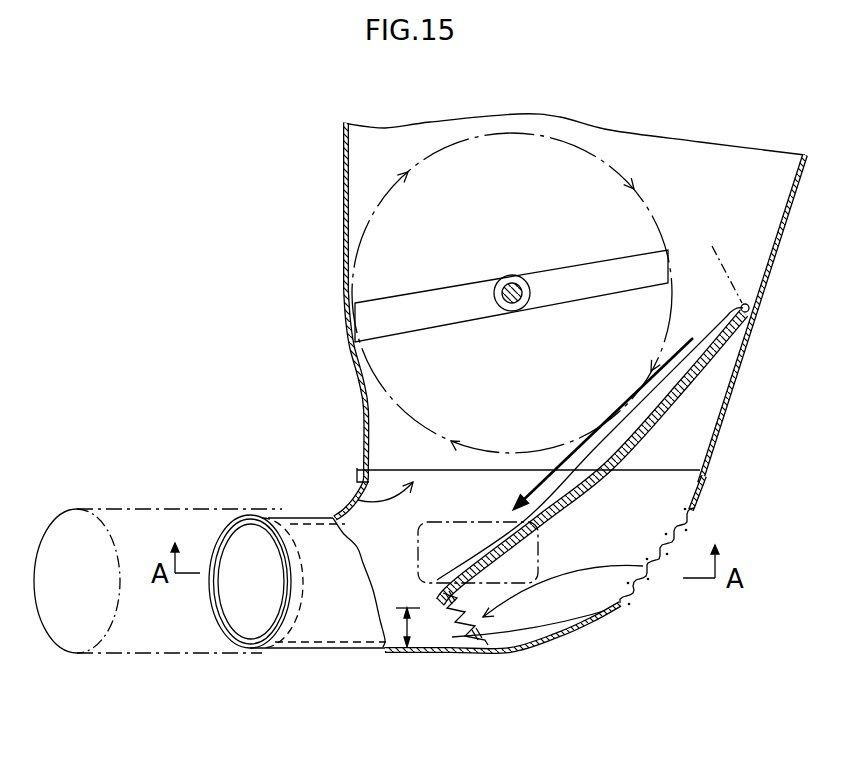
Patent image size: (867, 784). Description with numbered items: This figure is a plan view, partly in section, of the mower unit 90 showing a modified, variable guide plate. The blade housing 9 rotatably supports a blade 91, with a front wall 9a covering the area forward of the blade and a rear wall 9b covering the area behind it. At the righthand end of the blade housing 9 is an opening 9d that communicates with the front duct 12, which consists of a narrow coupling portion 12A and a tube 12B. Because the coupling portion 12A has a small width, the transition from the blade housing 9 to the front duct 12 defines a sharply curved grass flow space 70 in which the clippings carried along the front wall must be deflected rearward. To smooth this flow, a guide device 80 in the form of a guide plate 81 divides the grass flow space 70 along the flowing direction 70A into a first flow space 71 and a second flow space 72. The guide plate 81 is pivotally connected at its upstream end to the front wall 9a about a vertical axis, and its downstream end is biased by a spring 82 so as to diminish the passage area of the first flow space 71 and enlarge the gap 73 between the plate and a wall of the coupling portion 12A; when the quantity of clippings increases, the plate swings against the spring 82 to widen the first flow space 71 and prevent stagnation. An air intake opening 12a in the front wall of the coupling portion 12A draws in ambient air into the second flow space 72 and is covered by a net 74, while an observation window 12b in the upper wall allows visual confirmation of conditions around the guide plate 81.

The blade housing 9 is at (343, 186).
The mower unit 90 is at (316, 248).
The rear wall 9b is at (344, 292).
The opening 9d is at (352, 500).
The grass flow space 70 is at (500, 420).
The blade 91 is at (600, 262).
The front wall 9a is at (722, 410).
The guide device 80 is at (606, 478).
The guide plate 81 is at (697, 493).
The flowing direction 70A is at (612, 438).
The first flow space 71 is at (528, 489).
The second flow space 72 is at (563, 565).
The gap 73 is at (386, 642).
The spring 82 is at (455, 625).
The net 74 is at (638, 600).
The air intake opening 12a is at (653, 590).
The observation window 12b is at (533, 578).
The coupling portion 12A is at (322, 650).
The tube 12B is at (202, 652).
The front duct 12 is at (185, 716).